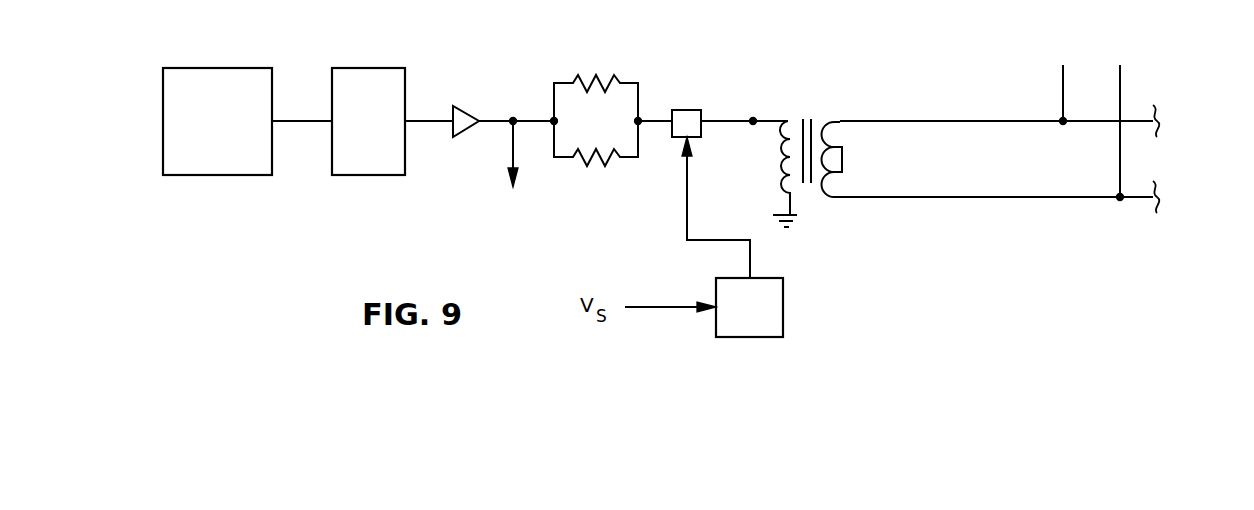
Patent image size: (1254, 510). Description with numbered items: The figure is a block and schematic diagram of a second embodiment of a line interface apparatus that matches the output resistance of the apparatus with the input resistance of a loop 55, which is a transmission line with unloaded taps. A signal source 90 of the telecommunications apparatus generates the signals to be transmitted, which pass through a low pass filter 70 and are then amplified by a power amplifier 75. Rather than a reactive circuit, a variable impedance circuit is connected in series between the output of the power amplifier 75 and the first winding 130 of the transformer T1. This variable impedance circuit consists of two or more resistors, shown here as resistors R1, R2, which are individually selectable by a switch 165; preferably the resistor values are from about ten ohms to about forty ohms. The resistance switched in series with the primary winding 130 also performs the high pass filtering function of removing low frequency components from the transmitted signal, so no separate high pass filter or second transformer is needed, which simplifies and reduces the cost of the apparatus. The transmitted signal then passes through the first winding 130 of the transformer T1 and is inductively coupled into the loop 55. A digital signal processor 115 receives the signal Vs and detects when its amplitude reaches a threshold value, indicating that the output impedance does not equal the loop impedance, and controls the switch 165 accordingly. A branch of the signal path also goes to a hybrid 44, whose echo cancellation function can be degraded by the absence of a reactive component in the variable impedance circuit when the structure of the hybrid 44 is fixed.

The signal source 90 is at (192, 68).
The low pass filter 70 is at (353, 68).
The power amplifier 75 is at (463, 106).
The hybrid 44 is at (505, 182).
The resistor R1 is at (590, 75).
The resistor R2 is at (590, 165).
The switch 165 is at (685, 110).
The digital signal processor 115 is at (783, 288).
The first winding 130 is at (787, 122).
The transformer T1 is at (818, 141).
The loop 55 is at (915, 207).